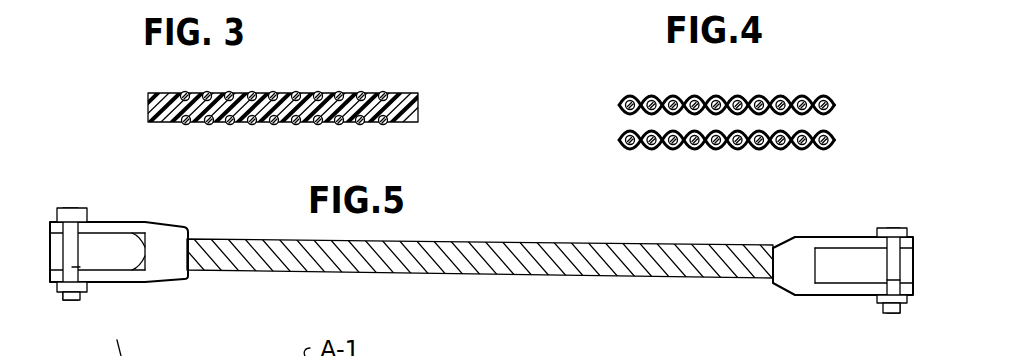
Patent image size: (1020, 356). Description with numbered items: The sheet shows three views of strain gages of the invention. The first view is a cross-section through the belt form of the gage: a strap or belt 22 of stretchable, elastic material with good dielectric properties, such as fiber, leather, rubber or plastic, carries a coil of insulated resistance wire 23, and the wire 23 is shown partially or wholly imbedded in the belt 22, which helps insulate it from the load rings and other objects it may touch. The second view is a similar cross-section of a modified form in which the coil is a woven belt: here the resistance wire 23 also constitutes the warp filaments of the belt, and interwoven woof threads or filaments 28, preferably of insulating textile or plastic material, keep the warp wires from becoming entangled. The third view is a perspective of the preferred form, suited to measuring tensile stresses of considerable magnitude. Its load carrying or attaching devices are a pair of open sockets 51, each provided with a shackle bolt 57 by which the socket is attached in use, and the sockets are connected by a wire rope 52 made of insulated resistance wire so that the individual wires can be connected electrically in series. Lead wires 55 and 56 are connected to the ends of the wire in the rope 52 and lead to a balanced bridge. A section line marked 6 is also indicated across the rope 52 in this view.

In FIG. 3, the strap or belt 22 is at (420, 108).
In FIG. 3, the resistance wire 23 is at (338, 94).
In FIG. 4, the resistance wire 23 is at (693, 100).
In FIG. 4, the woof threads or filaments 28 is at (785, 97).
In FIG. 5, the open socket 51 is at (787, 237).
In FIG. 5, the wire rope 52 is at (453, 265).
In FIG. 5, the lead wire 55 is at (132, 222).
In FIG. 5, the lead wire 56 is at (113, 316).
In FIG. 5, the shackle bolt 57 is at (895, 230).
In FIG. 5, the section line 6- 6 is at (593, 239).